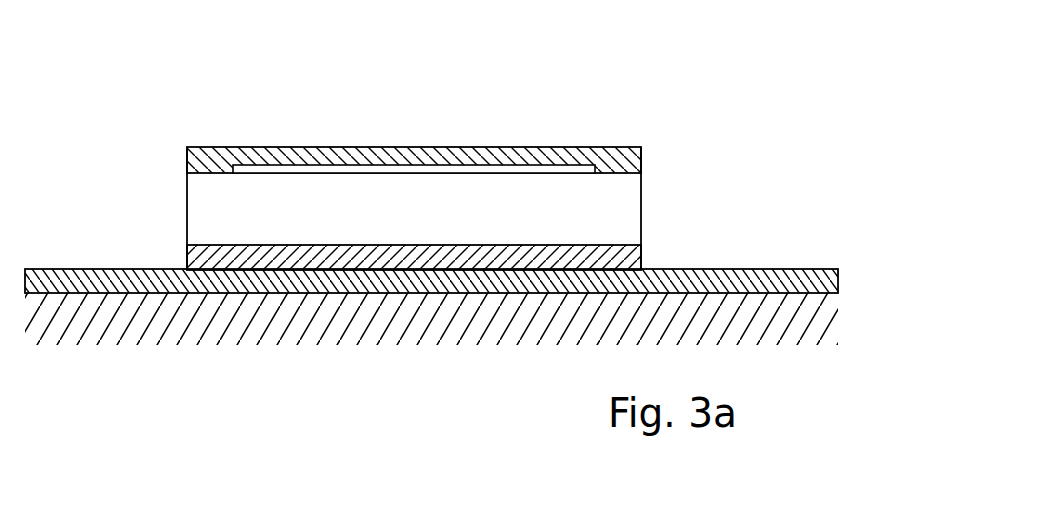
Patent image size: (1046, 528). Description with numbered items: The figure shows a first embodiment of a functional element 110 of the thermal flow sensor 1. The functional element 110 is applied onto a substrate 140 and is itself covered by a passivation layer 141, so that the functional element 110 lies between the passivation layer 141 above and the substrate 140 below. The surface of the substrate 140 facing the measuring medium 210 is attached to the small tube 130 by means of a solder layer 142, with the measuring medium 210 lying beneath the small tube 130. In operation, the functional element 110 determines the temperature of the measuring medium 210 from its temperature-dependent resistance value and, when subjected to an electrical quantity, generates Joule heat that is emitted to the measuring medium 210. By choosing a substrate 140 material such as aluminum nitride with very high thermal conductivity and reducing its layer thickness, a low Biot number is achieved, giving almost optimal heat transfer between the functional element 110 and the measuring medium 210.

The thermal flow sensor 1 is at (125, 118).
The functional element 110 is at (472, 169).
The small tube 130 is at (98, 269).
The substrate 140 is at (186, 218).
The passivation layer 141 is at (291, 147).
The solder layer 142 is at (642, 258).
The measuring medium 210 is at (838, 315).